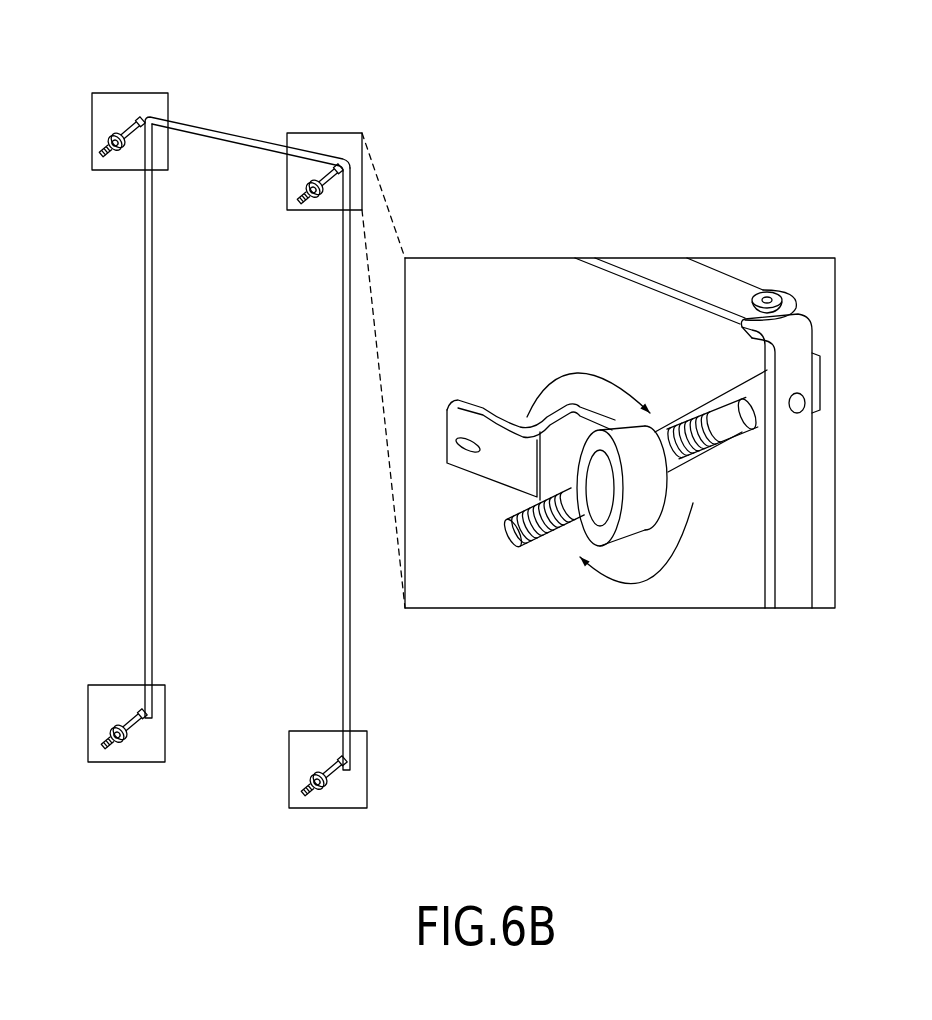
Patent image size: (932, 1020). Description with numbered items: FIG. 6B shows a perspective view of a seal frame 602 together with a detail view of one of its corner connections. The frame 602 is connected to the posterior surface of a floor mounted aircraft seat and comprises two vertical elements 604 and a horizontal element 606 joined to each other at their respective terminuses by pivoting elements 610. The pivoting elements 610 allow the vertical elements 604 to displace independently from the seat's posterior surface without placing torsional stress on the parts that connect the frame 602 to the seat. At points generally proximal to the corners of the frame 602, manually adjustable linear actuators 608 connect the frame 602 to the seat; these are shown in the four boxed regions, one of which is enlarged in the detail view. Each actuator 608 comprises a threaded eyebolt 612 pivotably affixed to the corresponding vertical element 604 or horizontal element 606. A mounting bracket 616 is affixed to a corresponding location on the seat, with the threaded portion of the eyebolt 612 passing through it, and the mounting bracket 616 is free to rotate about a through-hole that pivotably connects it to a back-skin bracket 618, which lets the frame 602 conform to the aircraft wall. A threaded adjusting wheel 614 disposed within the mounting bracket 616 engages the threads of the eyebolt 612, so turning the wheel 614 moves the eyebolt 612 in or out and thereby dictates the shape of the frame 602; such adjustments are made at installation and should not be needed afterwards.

The frame 602 is at (370, 95).
The vertical element 604 is at (152, 438).
The horizontal element 606 is at (237, 133).
The manually adjustable linear actuator 608 is at (110, 138).
The pivoting element 610 is at (780, 290).
The threaded eyebolt 612 is at (730, 427).
The threaded adjusting wheel 614 is at (653, 517).
The mounting bracket 616 is at (600, 520).
The back-skin bracket 618 is at (470, 425).